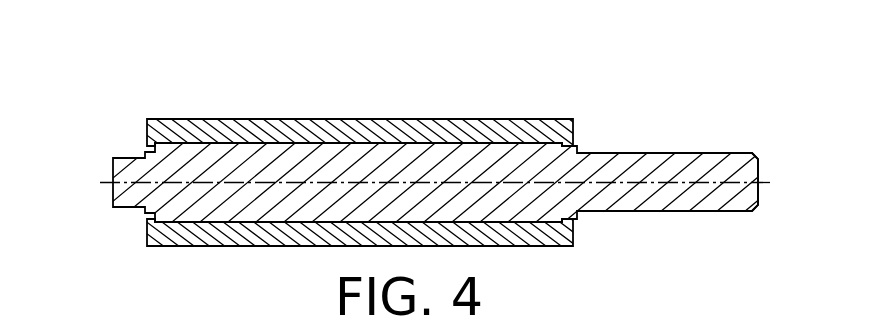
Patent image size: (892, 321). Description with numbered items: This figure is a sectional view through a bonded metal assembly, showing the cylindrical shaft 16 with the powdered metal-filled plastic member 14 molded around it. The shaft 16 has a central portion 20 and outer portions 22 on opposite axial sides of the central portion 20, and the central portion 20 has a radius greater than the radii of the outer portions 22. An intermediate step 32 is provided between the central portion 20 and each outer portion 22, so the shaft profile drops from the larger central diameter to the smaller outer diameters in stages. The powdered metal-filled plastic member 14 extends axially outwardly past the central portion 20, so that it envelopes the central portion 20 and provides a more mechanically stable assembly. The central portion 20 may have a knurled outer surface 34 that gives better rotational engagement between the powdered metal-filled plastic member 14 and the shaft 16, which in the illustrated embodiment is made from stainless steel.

The powdered metal-filled plastic member 14 is at (321, 119).
The cylindrical shaft 16 is at (660, 152).
The central portion 20 is at (475, 142).
The outer portions 22 is at (125, 208).
The intermediate step 32 is at (145, 150).
The knurled outer surface 34 is at (249, 223).